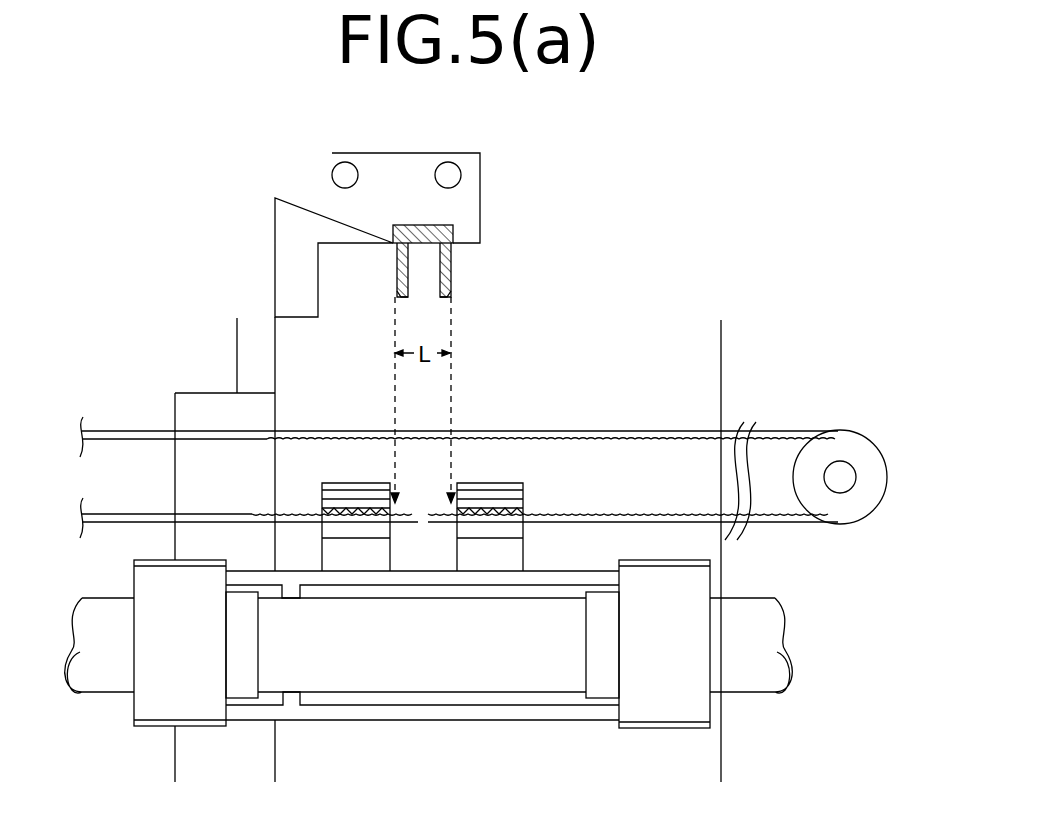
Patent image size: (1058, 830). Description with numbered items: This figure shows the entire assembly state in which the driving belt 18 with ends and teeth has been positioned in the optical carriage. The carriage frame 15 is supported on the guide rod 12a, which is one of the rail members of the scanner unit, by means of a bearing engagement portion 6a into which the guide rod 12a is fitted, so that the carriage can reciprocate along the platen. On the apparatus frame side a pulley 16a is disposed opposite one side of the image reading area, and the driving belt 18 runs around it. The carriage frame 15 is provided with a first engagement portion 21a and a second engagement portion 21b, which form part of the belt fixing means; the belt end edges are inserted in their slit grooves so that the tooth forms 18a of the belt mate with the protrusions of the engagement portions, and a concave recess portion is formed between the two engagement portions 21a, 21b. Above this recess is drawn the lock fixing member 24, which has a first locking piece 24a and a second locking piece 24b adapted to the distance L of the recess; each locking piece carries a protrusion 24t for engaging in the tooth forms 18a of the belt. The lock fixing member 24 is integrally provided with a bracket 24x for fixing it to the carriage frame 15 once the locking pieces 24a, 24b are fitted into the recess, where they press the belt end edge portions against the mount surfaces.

The bracket 24x is at (392, 172).
The lock fixing member 24 is at (431, 239).
The first locking piece 24a is at (400, 258).
The second locking piece 24b is at (448, 262).
The protrusion 24t is at (452, 289).
The carriage frame 15 is at (716, 368).
The driving belt 18 is at (459, 458).
The tooth forms 18a is at (567, 443).
The pulley 16a is at (838, 440).
The first engagement portion 21a is at (330, 503).
The second engagement portion 21b is at (487, 500).
The guide rod 12a is at (498, 683).
The bearing engagement portion 6a is at (150, 710).